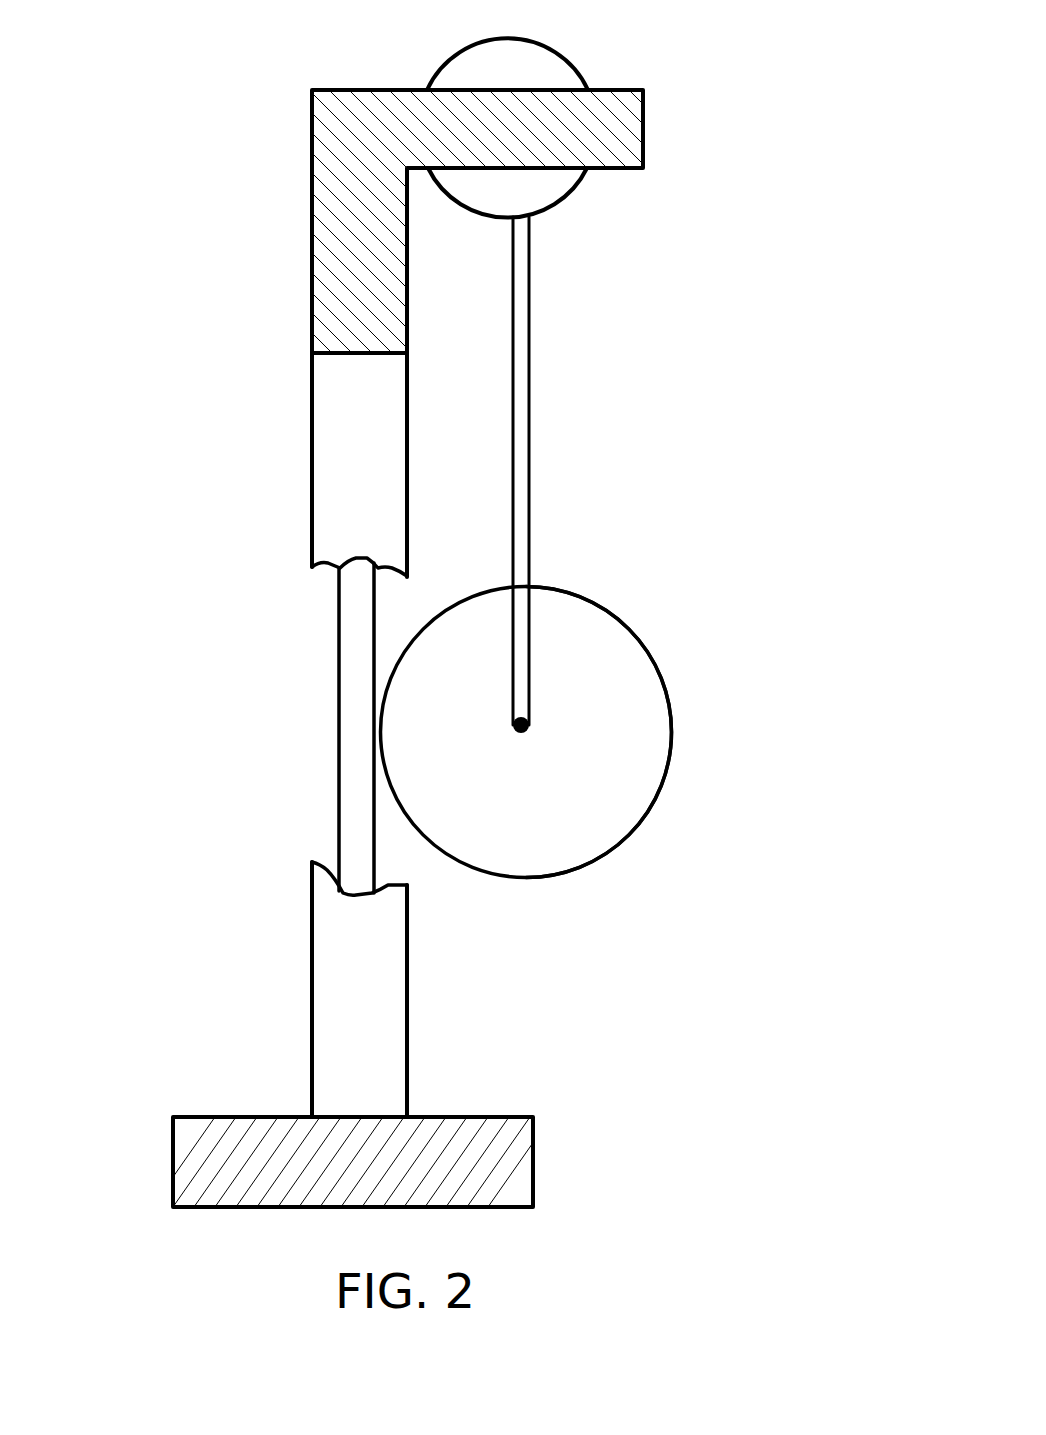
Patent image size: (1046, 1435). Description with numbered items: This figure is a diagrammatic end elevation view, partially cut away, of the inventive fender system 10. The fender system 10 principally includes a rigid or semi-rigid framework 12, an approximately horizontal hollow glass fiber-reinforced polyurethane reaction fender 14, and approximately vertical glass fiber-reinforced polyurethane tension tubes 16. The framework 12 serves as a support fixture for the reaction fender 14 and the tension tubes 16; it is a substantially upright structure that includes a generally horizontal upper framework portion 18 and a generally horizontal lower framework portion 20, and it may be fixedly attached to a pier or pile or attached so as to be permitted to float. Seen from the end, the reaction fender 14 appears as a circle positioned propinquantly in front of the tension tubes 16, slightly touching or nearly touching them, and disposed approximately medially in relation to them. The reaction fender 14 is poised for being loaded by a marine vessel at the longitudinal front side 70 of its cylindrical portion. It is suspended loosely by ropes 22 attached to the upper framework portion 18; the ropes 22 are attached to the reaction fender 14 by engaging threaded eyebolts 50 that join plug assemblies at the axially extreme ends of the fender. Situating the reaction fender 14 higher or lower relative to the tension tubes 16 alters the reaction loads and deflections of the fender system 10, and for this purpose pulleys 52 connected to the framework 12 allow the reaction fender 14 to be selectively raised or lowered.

The fender system 10 is at (800, 205).
The framework 12 is at (270, 240).
The reaction fender 14 is at (662, 657).
The tension tubes 16 is at (339, 684).
The upper framework portion 18 is at (312, 420).
The lower framework portion 20 is at (173, 1161).
The ropes 22 is at (529, 324).
The threaded eyebolts 50 is at (524, 735).
The pulleys 52 is at (560, 58).
The longitudinal front side 70 is at (693, 732).